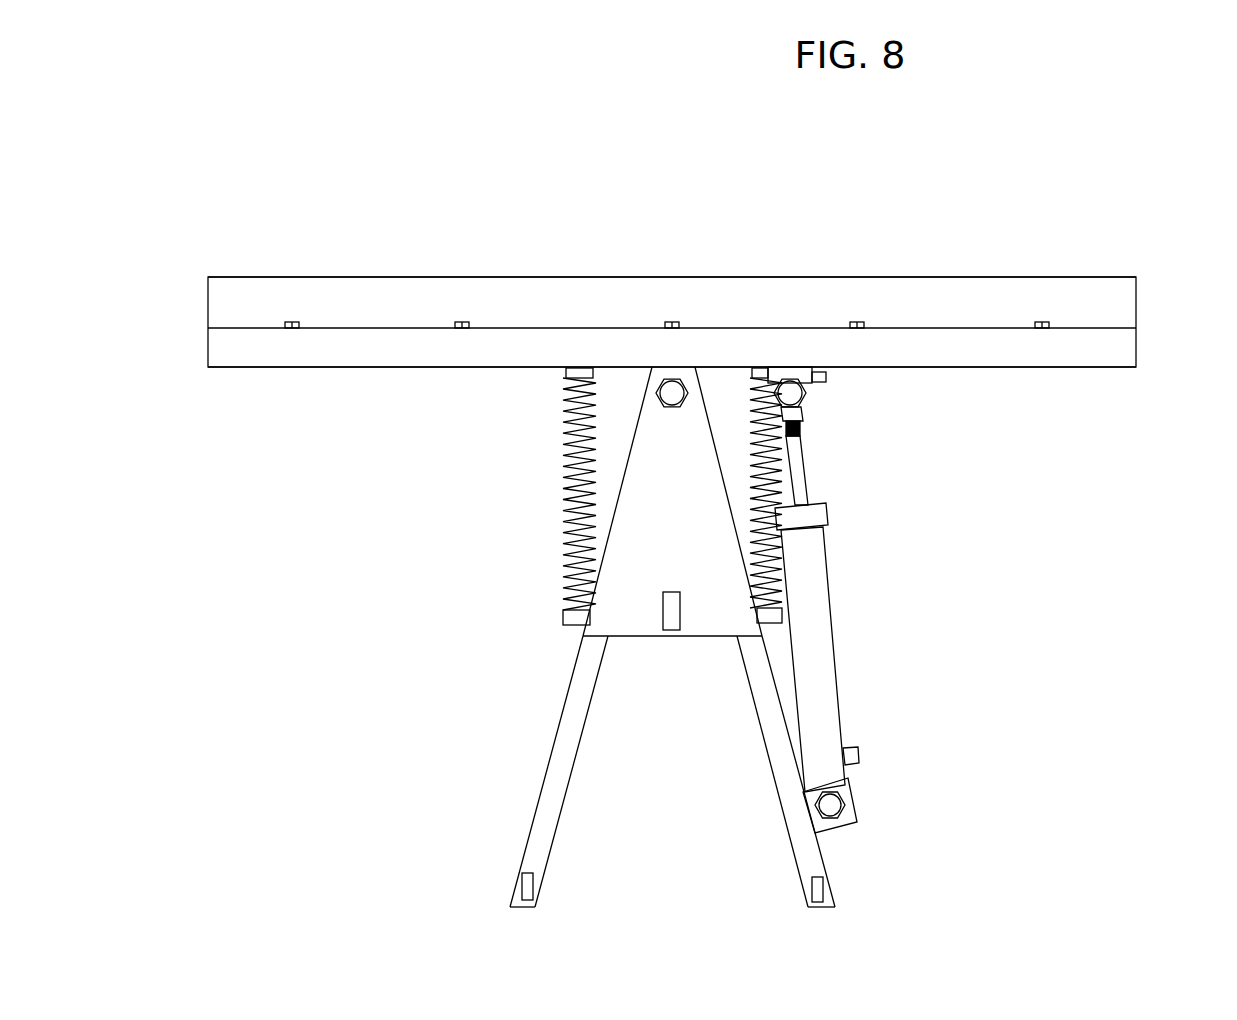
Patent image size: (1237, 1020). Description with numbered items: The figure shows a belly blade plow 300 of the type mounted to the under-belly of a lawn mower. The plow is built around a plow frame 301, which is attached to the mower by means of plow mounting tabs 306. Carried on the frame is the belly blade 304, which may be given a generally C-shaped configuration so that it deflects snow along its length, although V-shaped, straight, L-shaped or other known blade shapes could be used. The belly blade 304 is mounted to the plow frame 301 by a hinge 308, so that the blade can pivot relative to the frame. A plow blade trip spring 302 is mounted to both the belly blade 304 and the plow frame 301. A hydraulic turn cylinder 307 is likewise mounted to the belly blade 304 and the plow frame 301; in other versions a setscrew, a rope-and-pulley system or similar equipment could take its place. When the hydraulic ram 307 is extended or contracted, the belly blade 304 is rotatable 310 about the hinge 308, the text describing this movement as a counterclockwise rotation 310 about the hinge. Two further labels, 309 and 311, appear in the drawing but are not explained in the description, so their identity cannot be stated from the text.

The belly blade plow 300 is at (692, 230).
The plow frame 301 is at (583, 783).
The plow blade trip spring 302 is at (558, 473).
The belly blade 304 is at (593, 297).
The plow mounting tabs 306 is at (524, 888).
The hydraulic turn cylinder 307 is at (852, 640).
The hinge 308 is at (670, 406).
The spring seats 309 is at (545, 583).
The rotation of the belly blade 310 is at (443, 382).
The platform 311 is at (1050, 262).